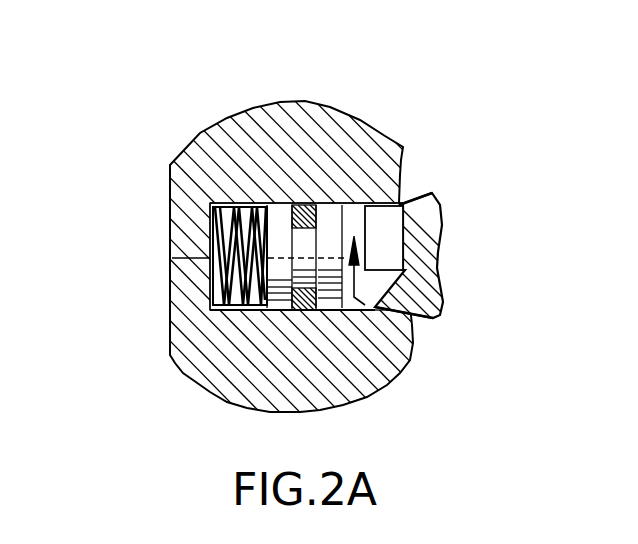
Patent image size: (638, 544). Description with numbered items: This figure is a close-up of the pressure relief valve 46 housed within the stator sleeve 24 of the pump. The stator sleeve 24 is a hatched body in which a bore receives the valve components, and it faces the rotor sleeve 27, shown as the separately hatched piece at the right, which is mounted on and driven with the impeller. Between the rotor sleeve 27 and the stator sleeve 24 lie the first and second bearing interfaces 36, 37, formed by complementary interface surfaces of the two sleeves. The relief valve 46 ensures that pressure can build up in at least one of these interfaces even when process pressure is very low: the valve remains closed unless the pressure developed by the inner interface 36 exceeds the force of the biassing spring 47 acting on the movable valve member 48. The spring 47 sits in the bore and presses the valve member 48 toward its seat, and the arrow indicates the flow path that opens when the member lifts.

The stator sleeve 24 is at (199, 142).
The rotor sleeve 27 is at (430, 253).
The first bearing interface 36 is at (422, 320).
The second bearing interface 37 is at (423, 193).
The pressure relief valve 46 is at (155, 364).
The biassing spring 47 is at (243, 306).
The movable valve member 48 is at (326, 310).